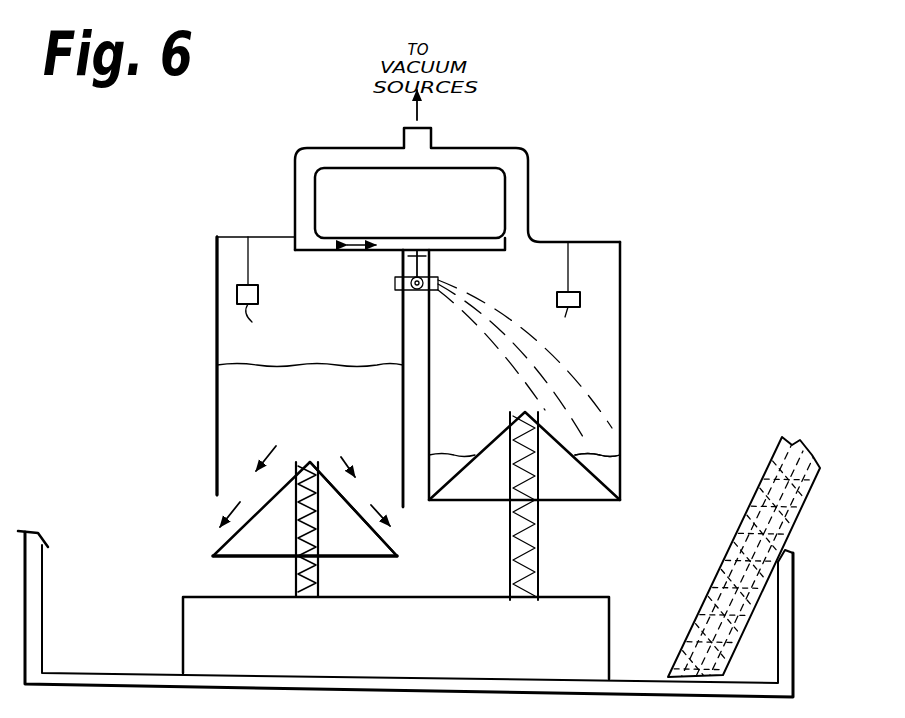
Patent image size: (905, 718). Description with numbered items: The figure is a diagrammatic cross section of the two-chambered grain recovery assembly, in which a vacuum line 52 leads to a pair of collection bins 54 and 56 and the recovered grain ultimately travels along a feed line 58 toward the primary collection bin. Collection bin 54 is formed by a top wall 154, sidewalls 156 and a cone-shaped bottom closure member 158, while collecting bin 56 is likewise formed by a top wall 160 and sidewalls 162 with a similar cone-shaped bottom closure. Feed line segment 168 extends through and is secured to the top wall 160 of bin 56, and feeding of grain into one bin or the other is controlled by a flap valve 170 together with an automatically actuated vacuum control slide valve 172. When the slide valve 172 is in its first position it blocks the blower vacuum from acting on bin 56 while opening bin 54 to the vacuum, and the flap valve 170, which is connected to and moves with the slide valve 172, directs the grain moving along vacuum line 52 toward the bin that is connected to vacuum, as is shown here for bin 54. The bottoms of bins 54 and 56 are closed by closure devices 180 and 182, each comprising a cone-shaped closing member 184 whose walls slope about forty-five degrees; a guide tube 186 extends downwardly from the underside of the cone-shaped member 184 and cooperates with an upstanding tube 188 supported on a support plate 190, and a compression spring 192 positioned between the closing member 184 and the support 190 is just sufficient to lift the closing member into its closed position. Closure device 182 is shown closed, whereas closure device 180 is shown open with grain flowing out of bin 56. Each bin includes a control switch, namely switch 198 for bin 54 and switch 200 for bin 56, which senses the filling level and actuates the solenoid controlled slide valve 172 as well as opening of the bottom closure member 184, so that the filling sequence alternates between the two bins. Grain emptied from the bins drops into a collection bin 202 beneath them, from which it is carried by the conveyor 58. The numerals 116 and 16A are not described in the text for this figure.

The feed line segment 168 is at (295, 189).
The top wall 160 is at (227, 237).
The vacuum chamber 116 is at (505, 203).
The vacuum control slide valve 172 is at (360, 240).
The flap valve 170 is at (440, 276).
The top wall 154 is at (606, 243).
The collecting bin 56 is at (214, 336).
The control switch 200 is at (265, 292).
The vacuum line 52 is at (401, 291).
The control switch 198 is at (570, 294).
The collection bin 54 is at (668, 368).
The sidewalls 162 is at (217, 438).
The feed line 58 is at (762, 455).
The sidewalls 156 is at (620, 458).
The cone-shaped bottom closure member 158 is at (570, 496).
The guide tube 186 is at (320, 523).
The closure device 180 is at (437, 540).
The closure device 182 is at (507, 557).
The deflector cone 16A is at (235, 550).
The upstanding tube 188 is at (318, 585).
The support plate 190 is at (460, 600).
The compression spring 192 is at (540, 570).
The cone-shaped closing member 184 is at (274, 558).
The collection bin 202 is at (76, 672).